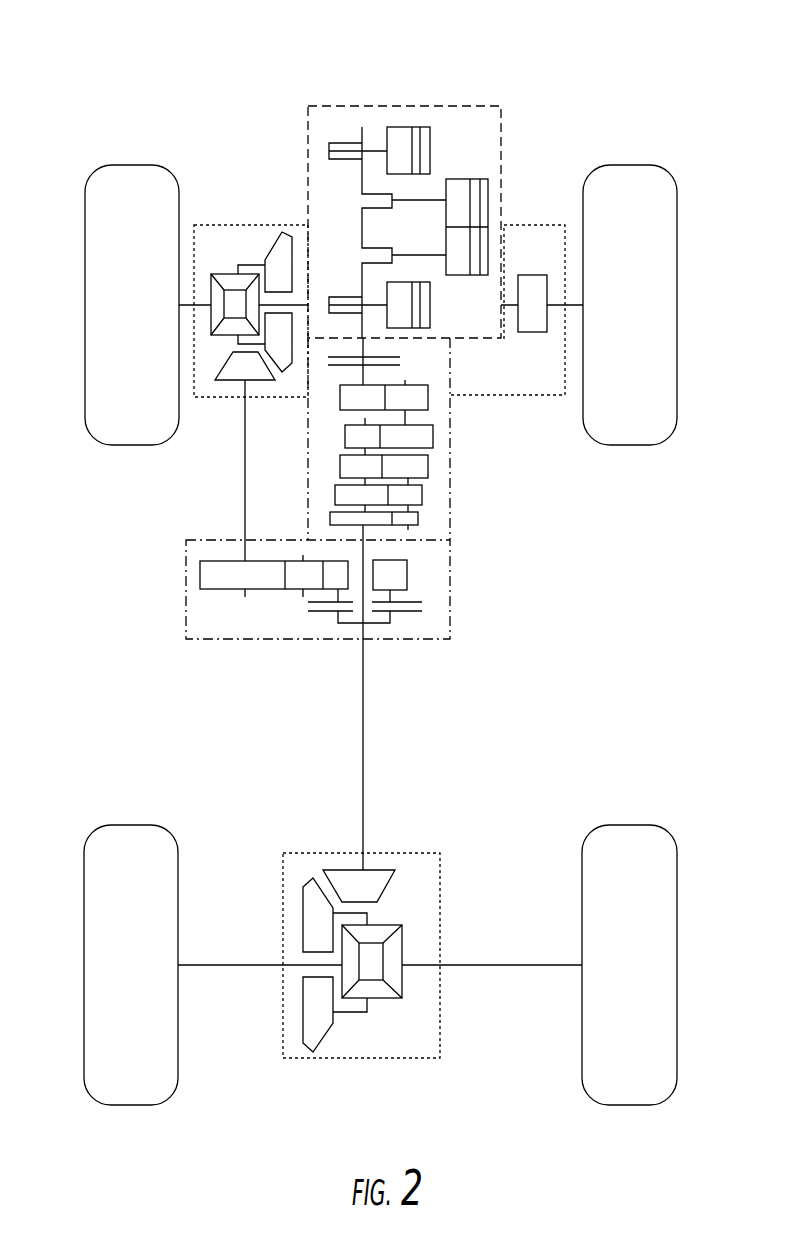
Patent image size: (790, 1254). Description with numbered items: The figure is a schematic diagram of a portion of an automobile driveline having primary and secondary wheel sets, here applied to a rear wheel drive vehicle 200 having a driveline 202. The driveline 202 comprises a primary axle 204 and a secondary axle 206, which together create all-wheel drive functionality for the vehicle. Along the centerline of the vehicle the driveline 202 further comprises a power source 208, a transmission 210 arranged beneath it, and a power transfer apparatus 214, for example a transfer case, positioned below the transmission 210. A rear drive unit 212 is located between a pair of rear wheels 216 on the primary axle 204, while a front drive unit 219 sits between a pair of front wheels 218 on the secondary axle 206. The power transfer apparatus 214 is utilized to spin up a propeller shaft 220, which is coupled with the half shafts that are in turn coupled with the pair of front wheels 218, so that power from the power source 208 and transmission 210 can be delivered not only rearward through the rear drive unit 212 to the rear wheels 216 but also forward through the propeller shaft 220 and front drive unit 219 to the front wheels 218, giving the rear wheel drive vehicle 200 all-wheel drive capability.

The rear wheel drive vehicle 200 is at (644, 82).
The driveline 202 is at (502, 606).
The primary axle 204 is at (493, 963).
The secondary axle 206 is at (575, 303).
The power source 208 is at (457, 115).
The transmission 210 is at (445, 473).
The rear drive unit 212 is at (375, 1032).
The power transfer apparatus 214 is at (195, 617).
The pair of rear wheels 216 is at (90, 923).
The pair of front wheels 218 is at (92, 230).
The front drive unit 219 is at (223, 233).
The propeller shaft 220 is at (245, 515).